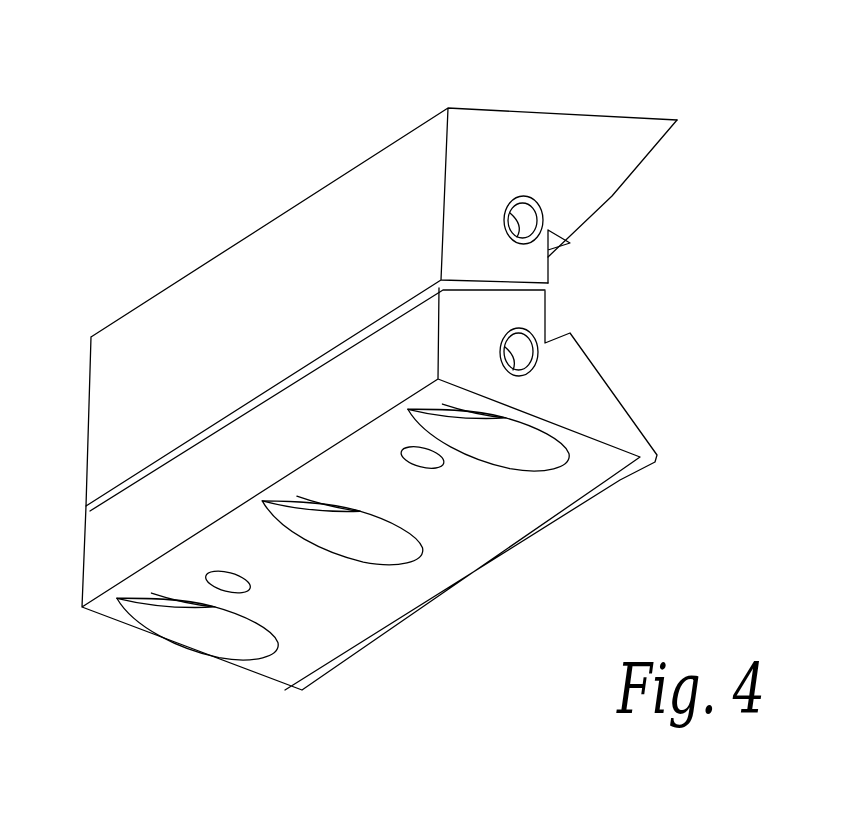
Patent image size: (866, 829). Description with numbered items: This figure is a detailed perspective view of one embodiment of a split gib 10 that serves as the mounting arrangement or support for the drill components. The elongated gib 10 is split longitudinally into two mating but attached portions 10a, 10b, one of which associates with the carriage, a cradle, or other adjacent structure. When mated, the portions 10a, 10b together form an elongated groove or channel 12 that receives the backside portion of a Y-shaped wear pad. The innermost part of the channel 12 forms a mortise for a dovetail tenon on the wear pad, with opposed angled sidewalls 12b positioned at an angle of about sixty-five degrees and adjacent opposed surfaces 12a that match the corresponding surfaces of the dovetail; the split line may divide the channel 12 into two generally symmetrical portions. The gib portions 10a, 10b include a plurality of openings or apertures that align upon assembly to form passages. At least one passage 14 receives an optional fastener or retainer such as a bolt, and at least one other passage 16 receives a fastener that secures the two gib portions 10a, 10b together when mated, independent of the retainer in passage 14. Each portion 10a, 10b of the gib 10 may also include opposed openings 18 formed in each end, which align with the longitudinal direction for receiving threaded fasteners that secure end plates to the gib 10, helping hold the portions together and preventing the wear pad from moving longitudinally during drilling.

The gib 10 is at (441, 398).
The gib portion 10a is at (607, 137).
The gib portion 10b is at (617, 417).
The channel 12 is at (674, 210).
The opposed surfaces 12a is at (563, 250).
The angled sidewalls 12b is at (633, 170).
The passage 14 is at (485, 437).
The passage 16 is at (427, 466).
The openings 18 is at (527, 197).